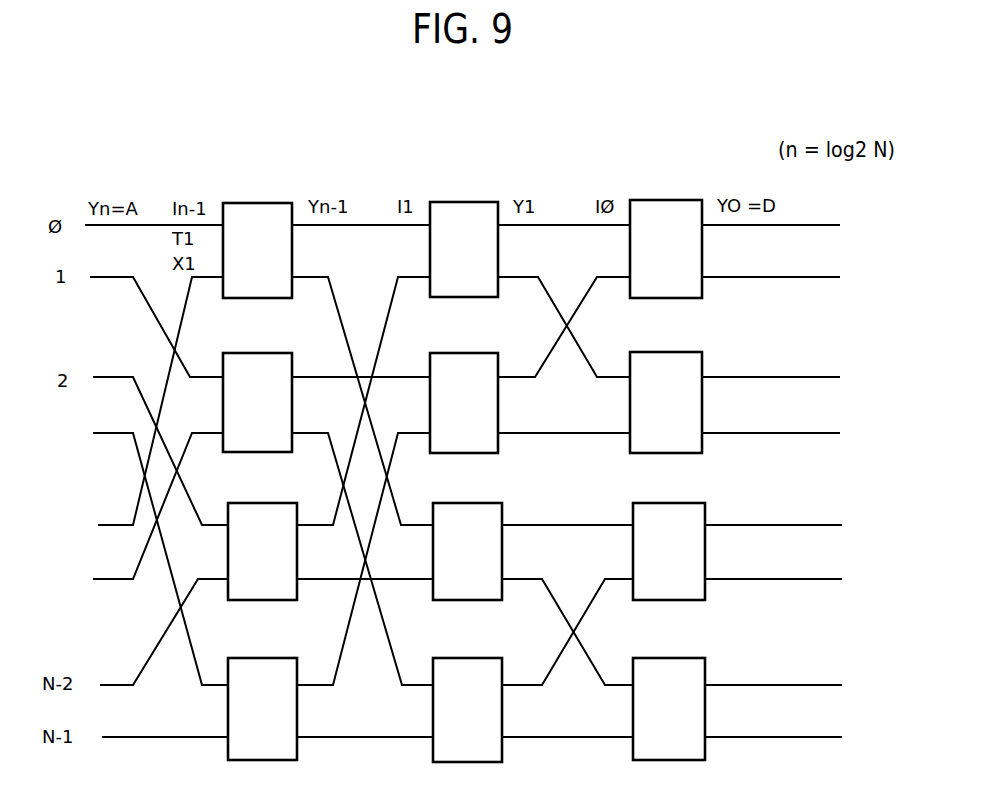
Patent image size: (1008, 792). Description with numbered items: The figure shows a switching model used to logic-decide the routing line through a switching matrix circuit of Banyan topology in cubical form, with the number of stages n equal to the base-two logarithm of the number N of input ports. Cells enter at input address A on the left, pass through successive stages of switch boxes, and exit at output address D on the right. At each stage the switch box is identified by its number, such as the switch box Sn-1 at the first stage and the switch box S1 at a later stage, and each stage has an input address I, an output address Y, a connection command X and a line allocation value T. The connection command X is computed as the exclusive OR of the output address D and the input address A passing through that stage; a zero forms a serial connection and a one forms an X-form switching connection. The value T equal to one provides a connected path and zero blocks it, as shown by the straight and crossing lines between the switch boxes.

The switch box number at stage n-1 Sn-1 is at (257, 250).
The switch box number at stage 1 S1 is at (464, 249).